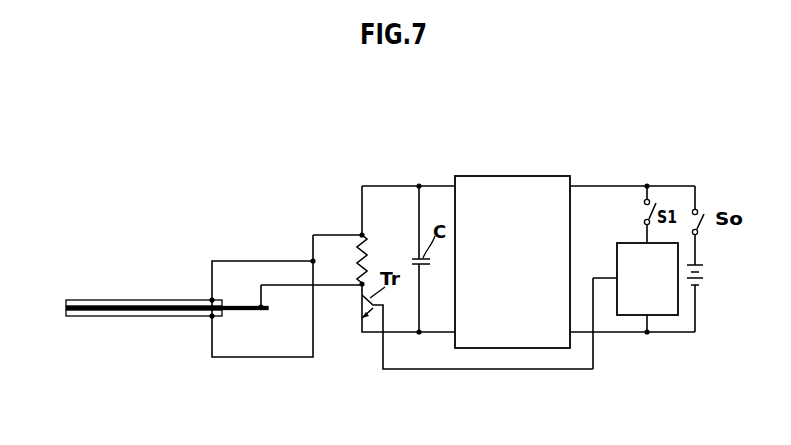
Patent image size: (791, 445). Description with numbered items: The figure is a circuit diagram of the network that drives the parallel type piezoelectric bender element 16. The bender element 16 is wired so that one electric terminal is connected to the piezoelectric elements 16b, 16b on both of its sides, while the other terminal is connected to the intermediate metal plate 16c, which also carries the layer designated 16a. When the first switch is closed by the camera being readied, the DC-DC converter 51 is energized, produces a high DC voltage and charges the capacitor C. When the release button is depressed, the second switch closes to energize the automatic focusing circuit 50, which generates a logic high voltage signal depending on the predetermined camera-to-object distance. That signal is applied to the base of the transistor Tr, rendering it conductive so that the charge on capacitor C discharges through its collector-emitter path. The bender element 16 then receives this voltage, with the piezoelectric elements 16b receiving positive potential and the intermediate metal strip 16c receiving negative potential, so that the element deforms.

The piezoelectric bender element 16 is at (72, 294).
The piezoelectric layer 16a is at (63, 312).
The piezoelectric elements 16b is at (116, 300).
The intermediate metal plate 16c is at (232, 308).
The automatic focusing circuit 50 is at (628, 313).
The DC-DC converter 51 is at (490, 340).